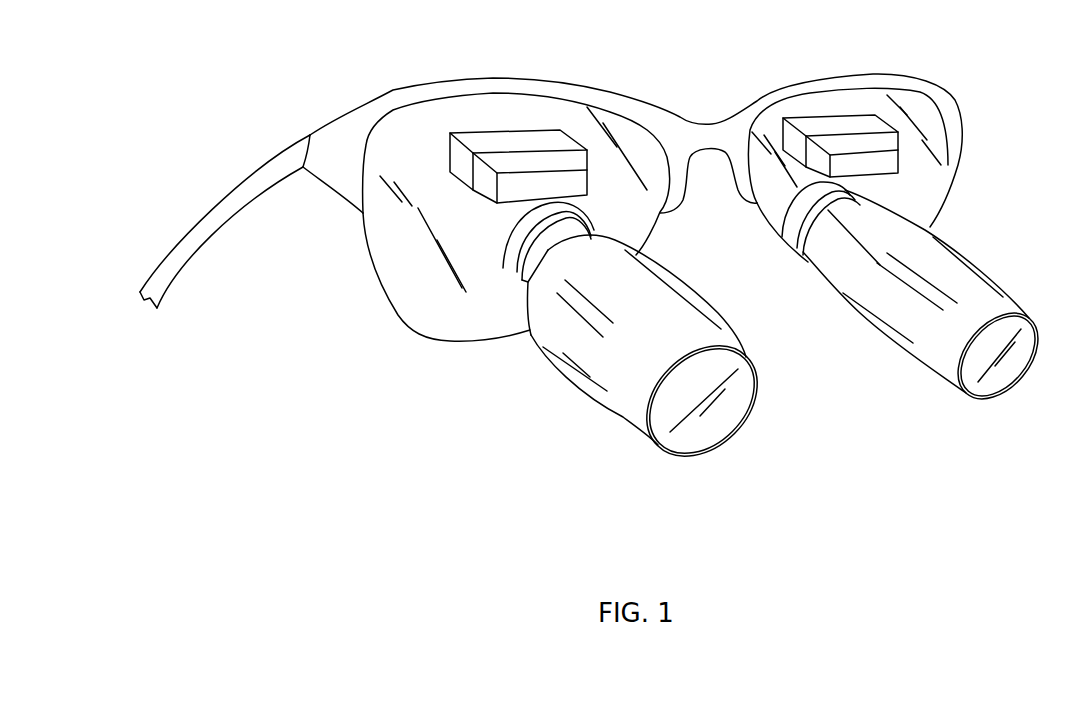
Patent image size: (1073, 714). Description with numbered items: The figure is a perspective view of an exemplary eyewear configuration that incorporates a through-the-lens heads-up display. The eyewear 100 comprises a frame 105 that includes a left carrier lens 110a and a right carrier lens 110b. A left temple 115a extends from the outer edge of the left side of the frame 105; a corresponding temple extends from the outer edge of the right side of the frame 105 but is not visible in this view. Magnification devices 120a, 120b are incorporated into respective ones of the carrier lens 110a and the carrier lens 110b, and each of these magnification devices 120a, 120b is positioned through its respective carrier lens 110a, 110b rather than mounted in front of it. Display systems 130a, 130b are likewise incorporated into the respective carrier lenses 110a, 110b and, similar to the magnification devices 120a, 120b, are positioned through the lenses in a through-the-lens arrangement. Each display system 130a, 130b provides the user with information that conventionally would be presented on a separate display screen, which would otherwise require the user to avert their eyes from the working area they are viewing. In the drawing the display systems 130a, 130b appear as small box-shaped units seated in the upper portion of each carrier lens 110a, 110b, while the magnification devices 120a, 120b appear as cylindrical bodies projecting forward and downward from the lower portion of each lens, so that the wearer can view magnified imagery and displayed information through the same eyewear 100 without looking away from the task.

The eyewear 100 is at (935, 78).
The frame 105 is at (338, 133).
The left temple 115a is at (206, 226).
The carrier lens 110a is at (424, 280).
The carrier lens 110b is at (927, 186).
The display system 130a is at (552, 162).
The display system 130b is at (840, 143).
The magnification device 120a is at (633, 417).
The magnification device 120b is at (947, 363).